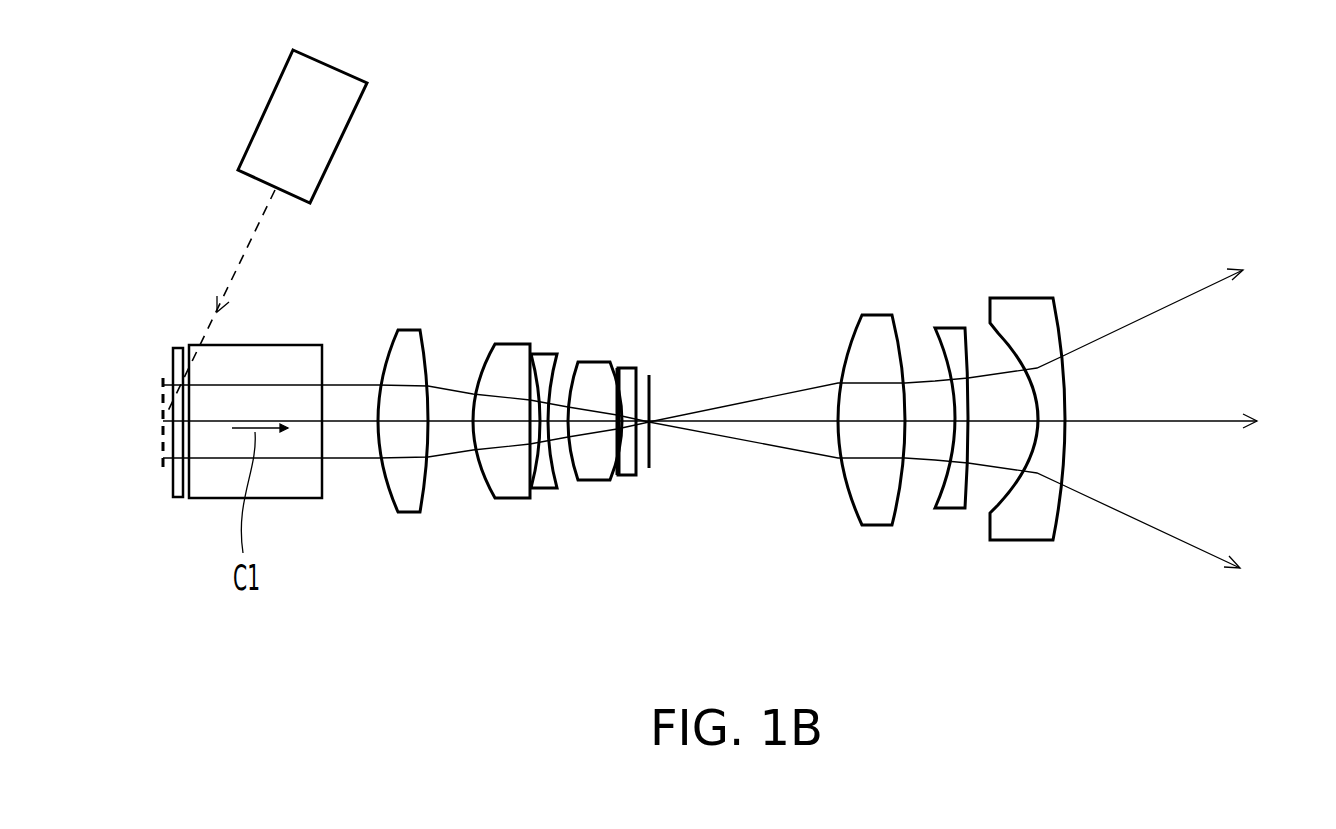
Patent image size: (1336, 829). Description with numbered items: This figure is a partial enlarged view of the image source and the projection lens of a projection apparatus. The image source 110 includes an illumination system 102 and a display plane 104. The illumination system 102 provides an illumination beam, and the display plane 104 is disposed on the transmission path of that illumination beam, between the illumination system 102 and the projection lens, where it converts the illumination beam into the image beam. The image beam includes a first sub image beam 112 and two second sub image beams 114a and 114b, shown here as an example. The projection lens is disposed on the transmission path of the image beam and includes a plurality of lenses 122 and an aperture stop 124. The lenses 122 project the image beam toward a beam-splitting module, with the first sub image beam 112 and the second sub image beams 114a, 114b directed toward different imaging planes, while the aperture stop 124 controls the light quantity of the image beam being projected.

The illumination system 102 is at (243, 155).
The display plane 104 is at (163, 383).
The image source 110 is at (163, 502).
The first sub image beam 112 is at (1213, 418).
The second sub image beam 114a is at (1192, 292).
The second sub image beam 114b is at (1192, 537).
The lenses 122 is at (408, 515).
The aperture stop 124 is at (645, 480).